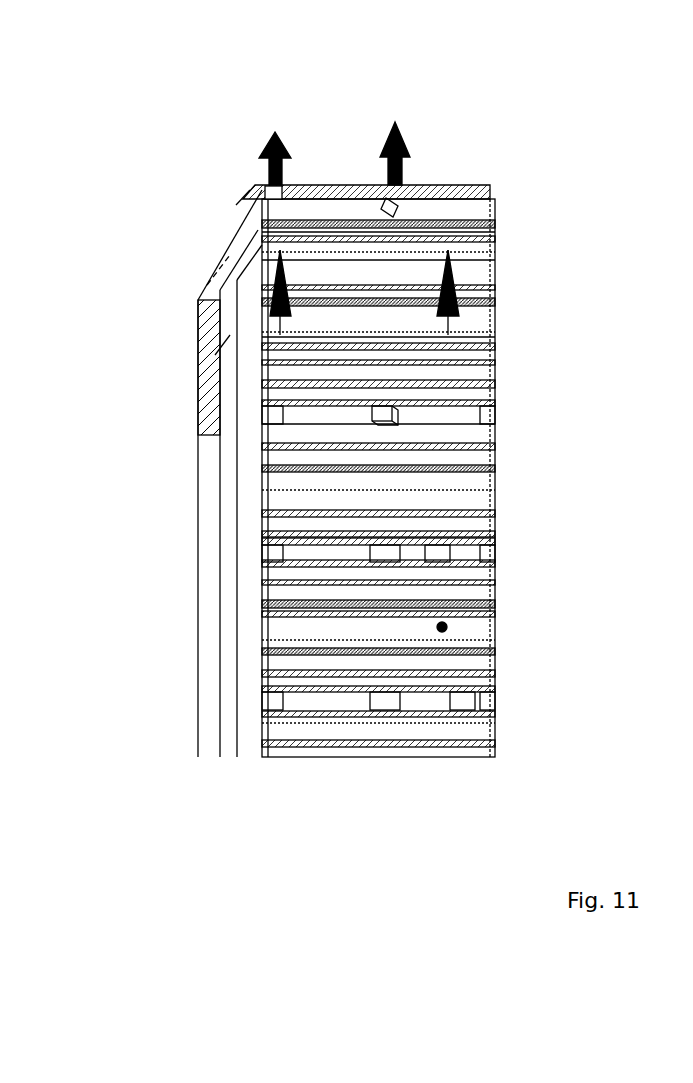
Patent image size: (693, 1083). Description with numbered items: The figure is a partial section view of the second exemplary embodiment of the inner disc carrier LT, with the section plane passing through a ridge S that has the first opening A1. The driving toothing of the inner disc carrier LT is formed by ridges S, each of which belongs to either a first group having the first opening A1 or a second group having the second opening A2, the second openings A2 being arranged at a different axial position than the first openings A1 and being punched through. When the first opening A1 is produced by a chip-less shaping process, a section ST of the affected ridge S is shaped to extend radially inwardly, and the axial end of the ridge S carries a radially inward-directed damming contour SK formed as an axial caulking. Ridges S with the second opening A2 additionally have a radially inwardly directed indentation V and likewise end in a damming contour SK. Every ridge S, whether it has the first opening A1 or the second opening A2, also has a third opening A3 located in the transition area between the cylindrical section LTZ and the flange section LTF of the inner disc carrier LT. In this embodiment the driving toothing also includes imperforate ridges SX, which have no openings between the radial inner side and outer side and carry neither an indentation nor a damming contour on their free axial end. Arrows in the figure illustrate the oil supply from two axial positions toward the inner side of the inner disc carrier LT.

The first opening A1 is at (380, 164).
The second opening A2 is at (440, 538).
The third opening A3 is at (264, 160).
The section ST is at (385, 198).
The inner disc carrier LT is at (421, 126).
The ridge S is at (440, 186).
The damming contour SK is at (500, 208).
The flange section LTF is at (210, 312).
The indentation V is at (385, 538).
The imperforate ridge SX is at (447, 627).
The cylindrical section LTZ is at (384, 822).